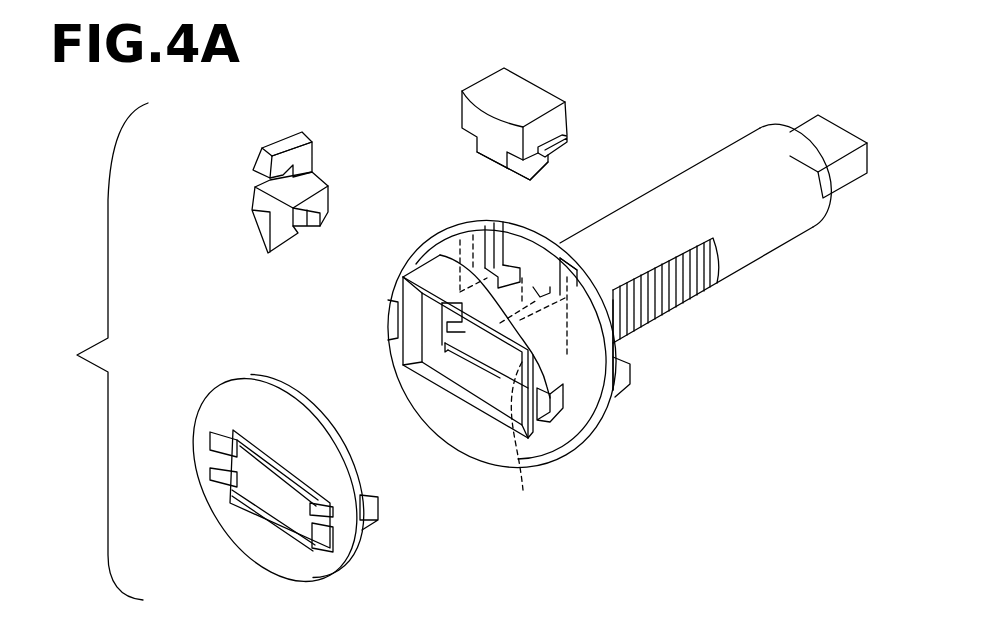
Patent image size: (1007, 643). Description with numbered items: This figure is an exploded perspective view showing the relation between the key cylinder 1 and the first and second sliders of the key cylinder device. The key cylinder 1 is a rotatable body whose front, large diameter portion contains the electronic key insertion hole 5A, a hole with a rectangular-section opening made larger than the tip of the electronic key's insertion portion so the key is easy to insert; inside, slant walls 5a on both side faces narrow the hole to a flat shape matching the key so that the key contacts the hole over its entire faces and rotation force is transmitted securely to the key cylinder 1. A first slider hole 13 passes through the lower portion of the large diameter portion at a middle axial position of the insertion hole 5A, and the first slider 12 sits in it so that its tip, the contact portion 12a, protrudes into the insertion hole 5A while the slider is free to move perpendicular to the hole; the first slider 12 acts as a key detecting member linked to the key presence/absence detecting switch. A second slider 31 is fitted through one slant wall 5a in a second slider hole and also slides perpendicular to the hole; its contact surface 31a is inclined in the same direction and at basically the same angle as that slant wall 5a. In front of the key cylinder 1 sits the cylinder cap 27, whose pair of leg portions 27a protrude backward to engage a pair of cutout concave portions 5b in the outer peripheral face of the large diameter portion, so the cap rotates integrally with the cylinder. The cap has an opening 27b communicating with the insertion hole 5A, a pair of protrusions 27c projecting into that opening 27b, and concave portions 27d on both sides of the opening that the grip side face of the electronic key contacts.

The key cylinder 1 is at (680, 178).
The electronic key insertion hole 5A is at (517, 362).
The slant walls 5a is at (498, 357).
The cutout concave portions 5b is at (388, 320).
The first slider 12 is at (537, 75).
The contact portion 12a is at (508, 173).
The first slider hole 13 is at (535, 253).
The cylinder cap 27 is at (237, 543).
The leg portions 27a is at (378, 523).
The opening 27b is at (258, 455).
The protrusions 27c is at (210, 473).
The concave portions 27d is at (303, 470).
The second slider 31 is at (262, 228).
The contact surface 31a is at (304, 218).